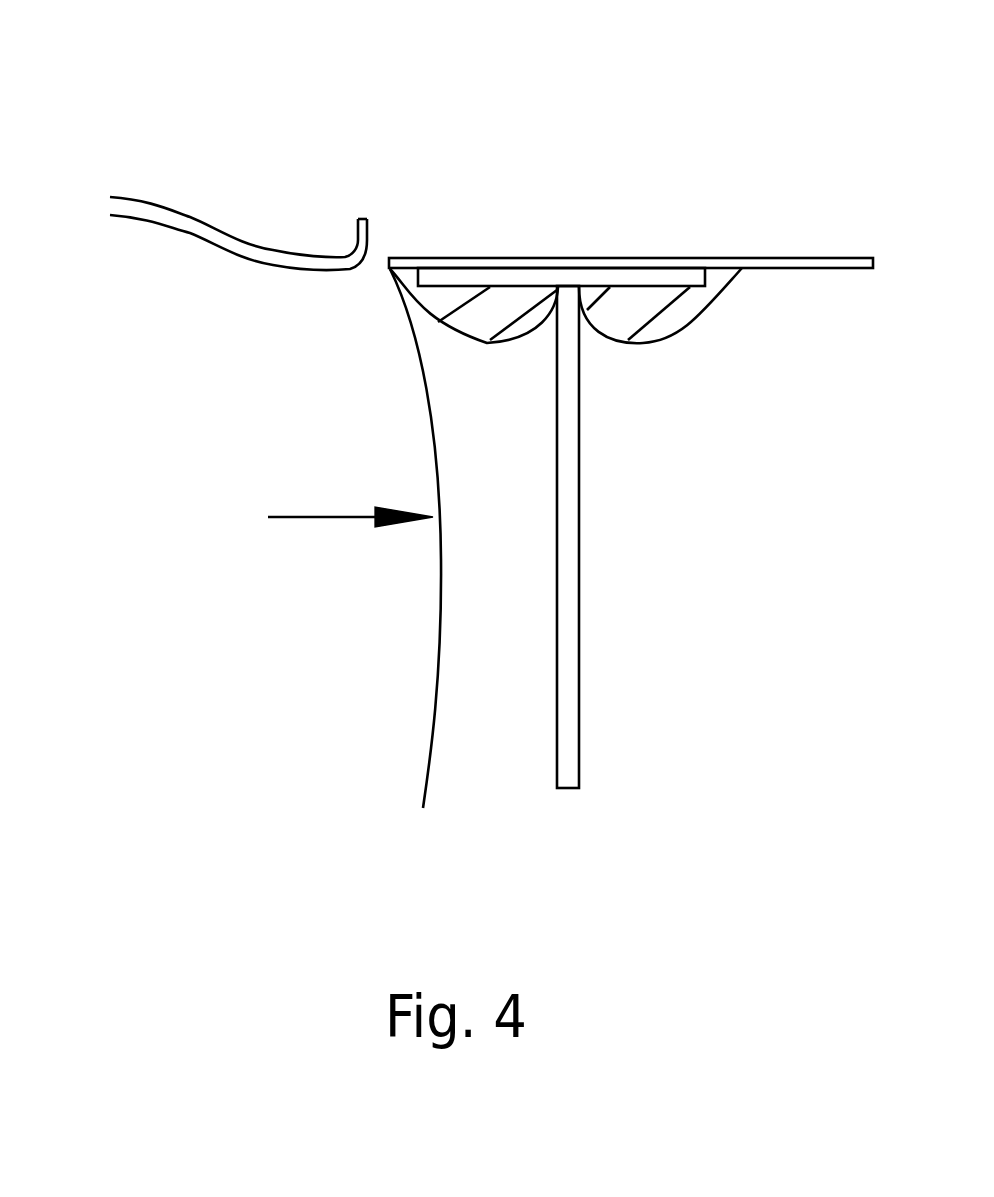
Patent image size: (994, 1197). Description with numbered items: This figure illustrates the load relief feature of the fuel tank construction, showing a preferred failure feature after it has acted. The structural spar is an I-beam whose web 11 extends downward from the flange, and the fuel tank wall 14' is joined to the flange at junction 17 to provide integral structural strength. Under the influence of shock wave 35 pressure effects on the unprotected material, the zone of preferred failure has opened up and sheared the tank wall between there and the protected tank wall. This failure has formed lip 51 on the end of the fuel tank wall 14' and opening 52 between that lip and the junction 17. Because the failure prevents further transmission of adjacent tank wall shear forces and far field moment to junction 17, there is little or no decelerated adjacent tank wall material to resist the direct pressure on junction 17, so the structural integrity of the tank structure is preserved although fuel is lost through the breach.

The fuel tank wall 14' is at (204, 138).
The lip 51 is at (357, 230).
The opening 52 is at (378, 243).
The junction 17 is at (547, 265).
The web 11 is at (568, 380).
The shock wave 35 is at (442, 645).